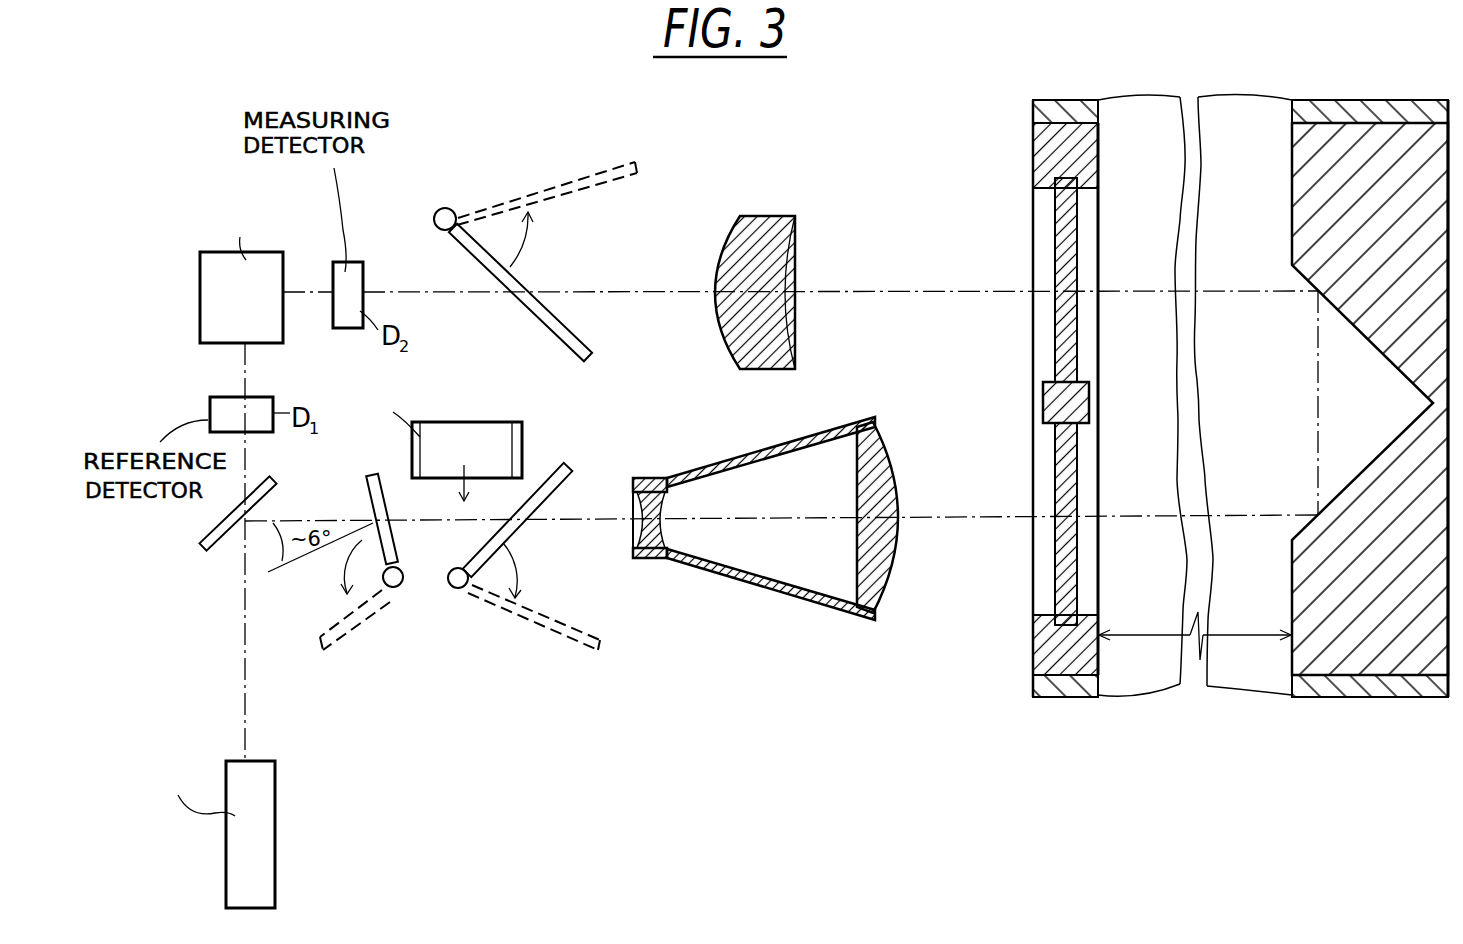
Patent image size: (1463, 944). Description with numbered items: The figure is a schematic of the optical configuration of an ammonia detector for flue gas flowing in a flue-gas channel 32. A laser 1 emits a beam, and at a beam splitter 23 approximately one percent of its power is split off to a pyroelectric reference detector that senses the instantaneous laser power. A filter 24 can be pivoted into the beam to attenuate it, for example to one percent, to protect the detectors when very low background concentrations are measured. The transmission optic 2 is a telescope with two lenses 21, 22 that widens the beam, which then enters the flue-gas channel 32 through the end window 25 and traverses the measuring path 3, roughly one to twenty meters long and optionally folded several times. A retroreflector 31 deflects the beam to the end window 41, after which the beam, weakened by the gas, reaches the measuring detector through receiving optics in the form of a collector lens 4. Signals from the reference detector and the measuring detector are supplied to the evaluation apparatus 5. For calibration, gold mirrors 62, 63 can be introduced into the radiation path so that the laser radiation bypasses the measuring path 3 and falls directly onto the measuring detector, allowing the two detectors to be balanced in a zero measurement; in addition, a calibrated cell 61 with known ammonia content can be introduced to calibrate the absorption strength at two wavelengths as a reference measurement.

The laser 1 is at (277, 841).
The transmission optic 2 is at (769, 605).
The measuring path 3 is at (1225, 687).
The collector lens 4 is at (770, 216).
The evaluation apparatus 5 is at (220, 327).
The lens 21 is at (640, 540).
The lens 22 is at (890, 567).
The beam splitter 23 is at (268, 487).
The filter 24 is at (372, 482).
The end window 25 is at (1072, 594).
The retroreflector 31 is at (1375, 462).
The flue-gas channel 32 is at (1137, 690).
The end window 41 is at (1065, 225).
The calibrated cell 61 is at (490, 430).
The gold mirror 62 is at (575, 470).
The gold mirror 63 is at (592, 353).